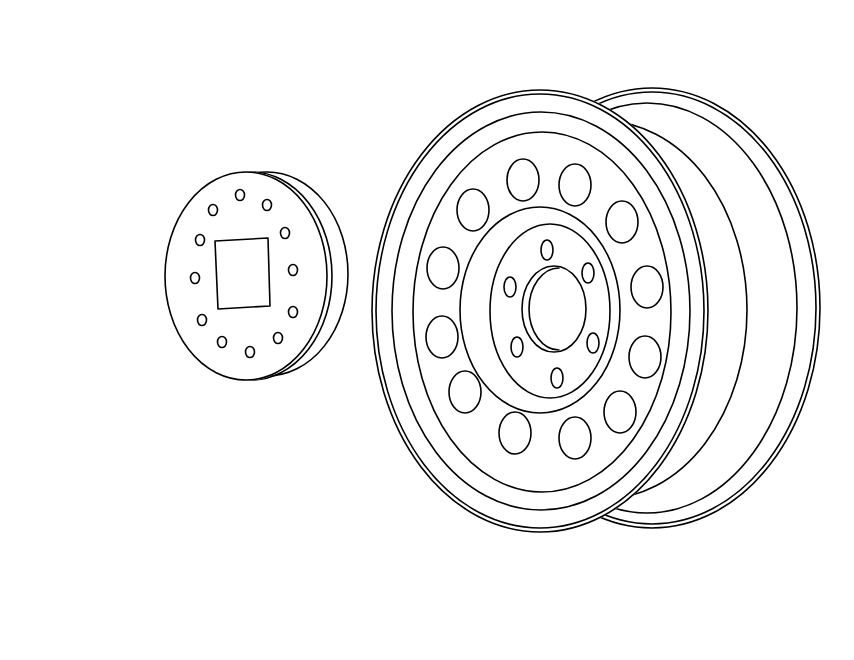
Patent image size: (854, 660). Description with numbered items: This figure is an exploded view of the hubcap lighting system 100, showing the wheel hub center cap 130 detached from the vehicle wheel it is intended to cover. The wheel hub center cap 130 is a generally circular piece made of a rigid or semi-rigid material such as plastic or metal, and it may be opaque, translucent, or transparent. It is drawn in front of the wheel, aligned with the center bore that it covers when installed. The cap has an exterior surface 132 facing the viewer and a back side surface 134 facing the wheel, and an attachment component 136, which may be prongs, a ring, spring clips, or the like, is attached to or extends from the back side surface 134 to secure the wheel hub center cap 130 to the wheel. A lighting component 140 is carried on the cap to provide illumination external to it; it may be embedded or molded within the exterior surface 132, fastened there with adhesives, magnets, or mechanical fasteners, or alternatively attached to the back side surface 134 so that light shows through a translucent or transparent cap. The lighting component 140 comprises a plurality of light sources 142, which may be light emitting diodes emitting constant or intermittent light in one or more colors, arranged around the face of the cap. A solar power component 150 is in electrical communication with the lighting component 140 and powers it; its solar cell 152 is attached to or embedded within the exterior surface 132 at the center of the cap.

The hubcap lighting system 100 is at (306, 115).
The wheel hub center cap 130 is at (218, 379).
The exterior surface 132 is at (187, 235).
The back side surface 134 is at (295, 182).
The attachment component 136 is at (325, 230).
The lighting component 140 is at (172, 283).
The plurality of light sources 142 is at (240, 195).
The solar power component 150 is at (202, 297).
The solar cell 152 is at (253, 282).